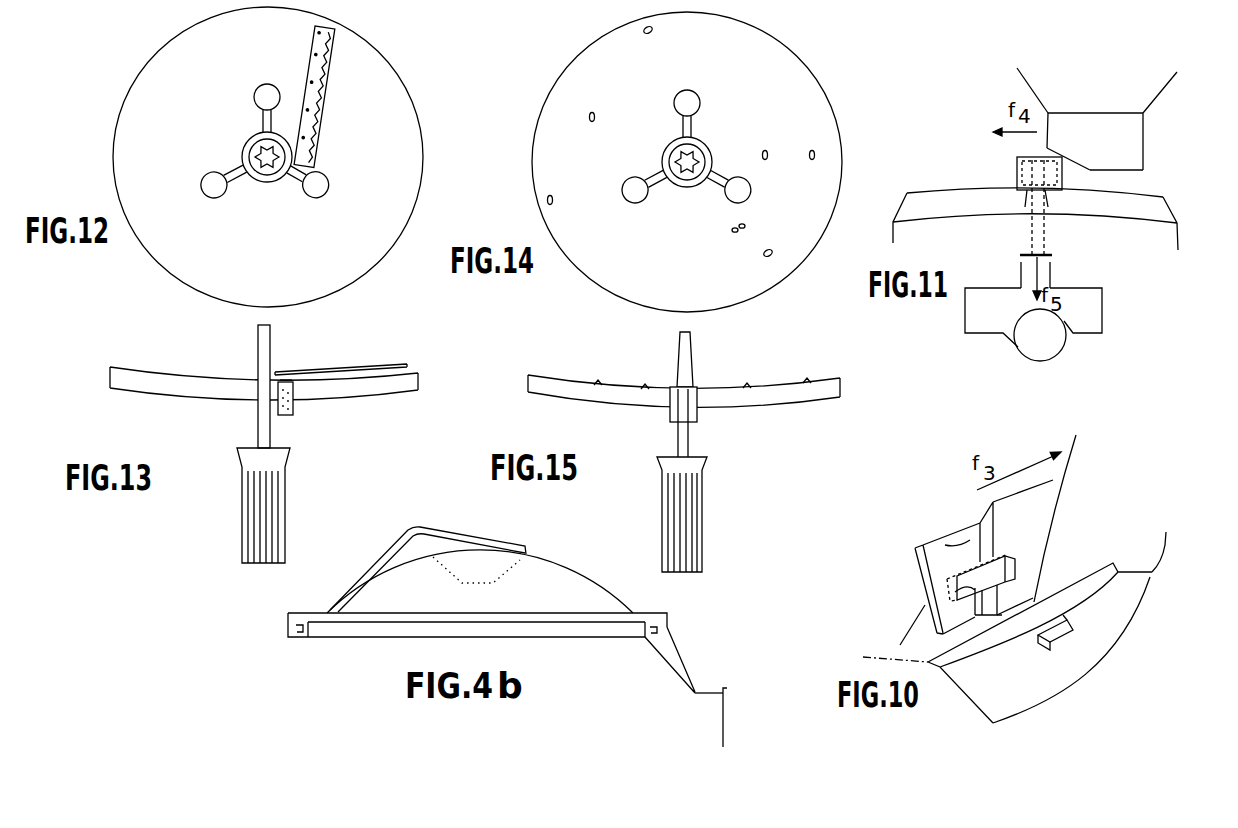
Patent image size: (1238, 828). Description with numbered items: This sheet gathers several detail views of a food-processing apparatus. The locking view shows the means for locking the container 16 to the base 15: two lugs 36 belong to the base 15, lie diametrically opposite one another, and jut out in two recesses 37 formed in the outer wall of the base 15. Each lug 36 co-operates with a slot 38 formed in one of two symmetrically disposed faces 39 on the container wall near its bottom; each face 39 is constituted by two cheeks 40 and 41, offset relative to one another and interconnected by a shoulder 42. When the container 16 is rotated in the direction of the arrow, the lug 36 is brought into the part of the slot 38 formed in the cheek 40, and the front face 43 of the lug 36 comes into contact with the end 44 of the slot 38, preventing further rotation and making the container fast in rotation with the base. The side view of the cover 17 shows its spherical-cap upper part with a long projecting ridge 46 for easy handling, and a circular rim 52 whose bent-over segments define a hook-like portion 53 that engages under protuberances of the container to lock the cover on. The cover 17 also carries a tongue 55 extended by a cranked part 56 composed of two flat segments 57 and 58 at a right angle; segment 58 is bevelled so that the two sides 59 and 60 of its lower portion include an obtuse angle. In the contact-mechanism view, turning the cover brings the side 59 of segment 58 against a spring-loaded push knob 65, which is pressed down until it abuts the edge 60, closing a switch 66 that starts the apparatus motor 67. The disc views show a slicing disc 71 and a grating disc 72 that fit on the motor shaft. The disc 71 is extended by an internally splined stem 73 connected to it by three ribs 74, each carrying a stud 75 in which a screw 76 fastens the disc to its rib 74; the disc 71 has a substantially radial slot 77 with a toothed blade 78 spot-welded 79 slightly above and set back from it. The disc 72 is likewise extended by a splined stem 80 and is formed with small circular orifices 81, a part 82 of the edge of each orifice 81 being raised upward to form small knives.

In FIG. 10, the base 15 is at (1170, 547).
In FIG. 10, the container 16 is at (1076, 440).
In FIG. 4B, the cover 17 is at (561, 567).
In FIG. 10, the lug 36 is at (1067, 641).
In FIG. 10, the recess 37 is at (1103, 663).
In FIG. 10, the slot 38 is at (1033, 536).
In FIG. 10, the face 39 is at (977, 535).
In FIG. 10, the cheek 40 is at (923, 577).
In FIG. 10, the cheek 41 is at (1049, 513).
In FIG. 10, the shoulder 42 is at (945, 545).
In FIG. 10, the front face 43 is at (1040, 644).
In FIG. 10, the end 44 is at (972, 616).
In FIG. 4B, the long projecting ridge 46 is at (387, 559).
In FIG. 4B, the circular rim 52 is at (560, 622).
In FIG. 4B, the hook-like portion 53 is at (303, 638).
In FIG. 11, the tongue 55 is at (1030, 91).
In FIG. 4B, the tongue 55 is at (660, 654).
In FIG. 4B, the cranked part 56 is at (718, 698).
In FIG. 4B, the flat segment 57 is at (724, 691).
In FIG. 11, the flat segment 58 is at (1144, 130).
In FIG. 4B, the flat segment 58 is at (724, 720).
In FIG. 11, the side 59 is at (1082, 137).
In FIG. 11, the edge 60 is at (1126, 170).
In FIG. 11, the push knob 65 is at (1017, 167).
In FIG. 11, the switch 66 is at (1018, 256).
In FIG. 11, the motor 67 is at (1022, 352).
In FIG. 12, the slicing disc 71 is at (174, 268).
In FIG. 13, the slicing disc 71 is at (171, 397).
In FIG. 14, the grating disc 72 is at (618, 294).
In FIG. 15, the grating disc 72 is at (603, 400).
In FIG. 12, the stem 73 is at (272, 172).
In FIG. 13, the stem 73 is at (242, 493).
In FIG. 12, the rib 74 is at (230, 164).
In FIG. 13, the rib 74 is at (272, 437).
In FIG. 12, the stud 75 is at (322, 188).
In FIG. 13, the stud 75 is at (295, 412).
In FIG. 13, the screw 76 is at (290, 380).
In FIG. 12, the radial slot 77 is at (323, 93).
In FIG. 12, the toothed blade 78 is at (311, 78).
In FIG. 13, the toothed blade 78 is at (356, 364).
In FIG. 12, the spot weld 79 is at (312, 60).
In FIG. 15, the stem 80 is at (662, 497).
In FIG. 14, the orifice 81 is at (731, 233).
In FIG. 14, the raised edge part 82 is at (744, 228).
In FIG. 15, the raised edge part 82 is at (746, 386).